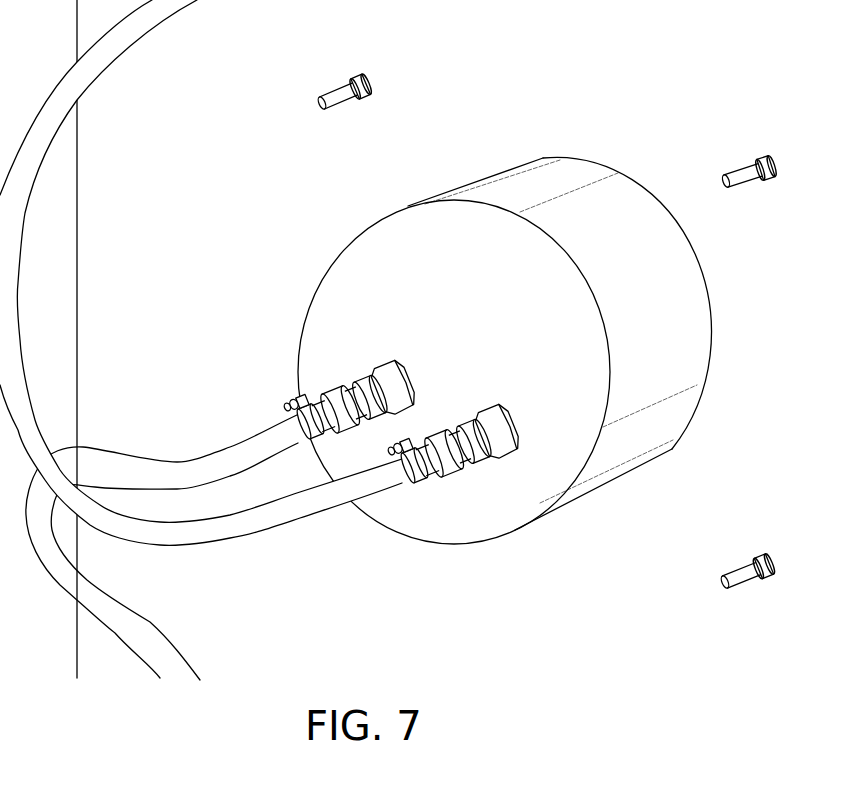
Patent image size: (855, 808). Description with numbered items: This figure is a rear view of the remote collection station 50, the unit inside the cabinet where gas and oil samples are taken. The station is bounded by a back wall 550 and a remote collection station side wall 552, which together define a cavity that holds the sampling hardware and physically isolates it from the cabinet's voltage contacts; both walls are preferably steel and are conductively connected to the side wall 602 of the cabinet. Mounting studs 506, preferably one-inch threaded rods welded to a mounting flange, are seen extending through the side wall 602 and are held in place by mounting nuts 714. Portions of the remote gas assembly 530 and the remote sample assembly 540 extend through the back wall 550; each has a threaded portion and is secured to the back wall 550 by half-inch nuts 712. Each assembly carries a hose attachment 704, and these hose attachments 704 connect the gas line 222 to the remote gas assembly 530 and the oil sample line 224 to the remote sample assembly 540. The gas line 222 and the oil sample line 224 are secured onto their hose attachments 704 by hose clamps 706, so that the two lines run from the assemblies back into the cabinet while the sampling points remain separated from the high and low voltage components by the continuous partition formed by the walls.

The remote collection station 50 is at (387, 201).
The side wall 602 is at (581, 81).
The back wall 550 is at (481, 325).
The remote collection station side wall 552 is at (660, 265).
The gas line 222 is at (25, 230).
The oil sample line 224 is at (175, 462).
The remote sample assembly 540 is at (350, 368).
The remote gas assembly 530 is at (503, 468).
The nuts 712 is at (387, 377).
The hose attachments 704 is at (327, 393).
The hose clamps 706 is at (300, 405).
The mounting studs 506 is at (340, 97).
The mounting nuts 714 is at (363, 79).